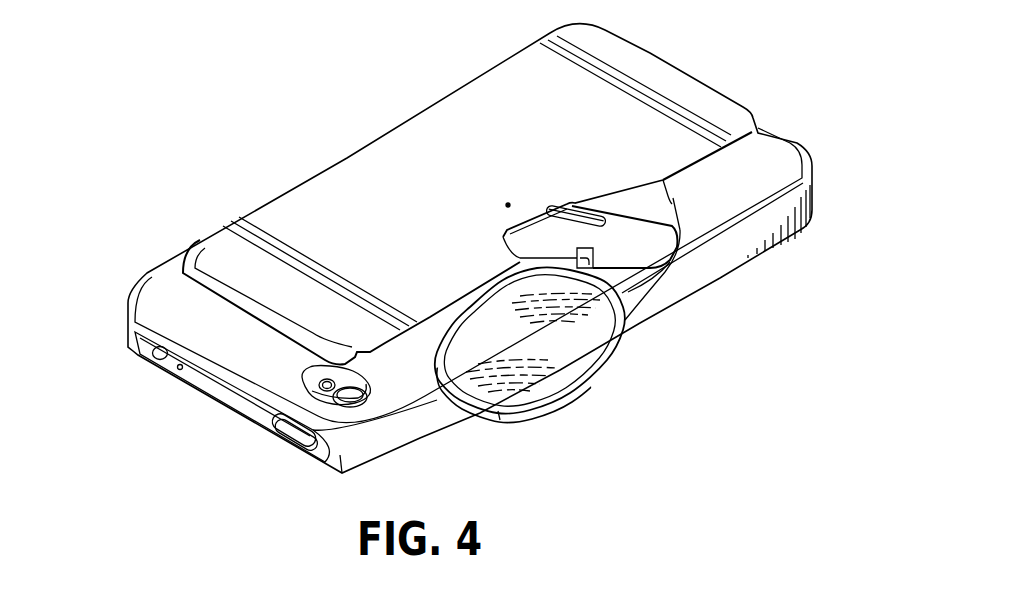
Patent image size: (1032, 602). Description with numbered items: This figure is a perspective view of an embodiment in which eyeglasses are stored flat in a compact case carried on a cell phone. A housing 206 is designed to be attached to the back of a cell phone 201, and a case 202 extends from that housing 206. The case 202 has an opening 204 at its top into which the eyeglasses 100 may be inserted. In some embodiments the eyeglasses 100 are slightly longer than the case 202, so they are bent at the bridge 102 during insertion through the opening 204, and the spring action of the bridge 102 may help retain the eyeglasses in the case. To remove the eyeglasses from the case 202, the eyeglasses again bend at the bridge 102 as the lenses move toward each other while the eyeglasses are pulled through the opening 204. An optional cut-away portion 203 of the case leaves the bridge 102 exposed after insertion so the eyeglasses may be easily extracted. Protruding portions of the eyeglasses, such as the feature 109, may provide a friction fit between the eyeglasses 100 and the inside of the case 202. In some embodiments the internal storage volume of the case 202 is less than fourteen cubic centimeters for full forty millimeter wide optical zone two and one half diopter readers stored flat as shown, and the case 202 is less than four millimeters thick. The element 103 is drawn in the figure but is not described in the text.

The eyeglasses 100 is at (635, 284).
The bridge 102 is at (673, 249).
The rail 103 is at (547, 254).
The feature 109 is at (582, 247).
The cell phone 201 is at (202, 387).
The case 202 is at (220, 236).
The cut-away portion 203 is at (520, 225).
The opening 204 is at (700, 170).
The housing 206 is at (155, 272).